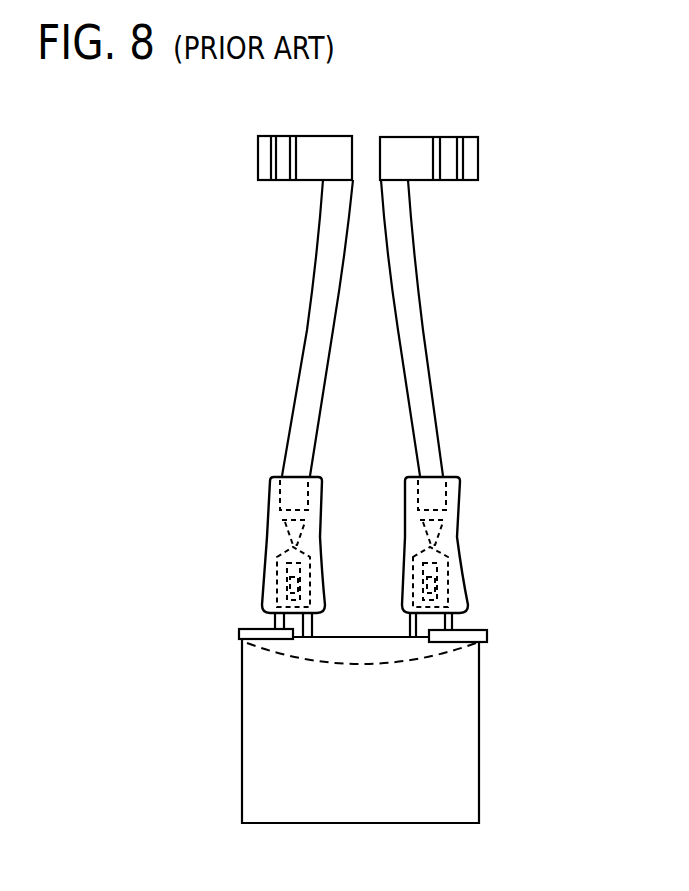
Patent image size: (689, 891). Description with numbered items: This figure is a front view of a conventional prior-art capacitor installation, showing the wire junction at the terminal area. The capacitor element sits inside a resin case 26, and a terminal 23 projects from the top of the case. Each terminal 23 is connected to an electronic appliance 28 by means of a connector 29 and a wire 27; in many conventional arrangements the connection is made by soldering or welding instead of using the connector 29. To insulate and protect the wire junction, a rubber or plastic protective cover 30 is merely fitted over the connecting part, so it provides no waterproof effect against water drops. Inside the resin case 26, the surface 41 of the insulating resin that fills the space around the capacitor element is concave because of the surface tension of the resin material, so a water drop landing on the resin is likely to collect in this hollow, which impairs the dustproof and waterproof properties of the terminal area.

The electronic appliance 28 is at (340, 153).
The wire 27 is at (327, 308).
The protective cover 30 is at (325, 488).
The connector 29 is at (300, 582).
The terminal 23 is at (276, 628).
The resin case 26 is at (457, 755).
The surface of the insulating resin 41 is at (325, 662).